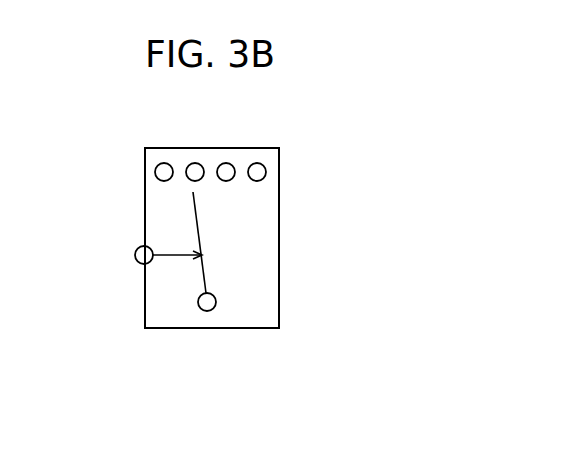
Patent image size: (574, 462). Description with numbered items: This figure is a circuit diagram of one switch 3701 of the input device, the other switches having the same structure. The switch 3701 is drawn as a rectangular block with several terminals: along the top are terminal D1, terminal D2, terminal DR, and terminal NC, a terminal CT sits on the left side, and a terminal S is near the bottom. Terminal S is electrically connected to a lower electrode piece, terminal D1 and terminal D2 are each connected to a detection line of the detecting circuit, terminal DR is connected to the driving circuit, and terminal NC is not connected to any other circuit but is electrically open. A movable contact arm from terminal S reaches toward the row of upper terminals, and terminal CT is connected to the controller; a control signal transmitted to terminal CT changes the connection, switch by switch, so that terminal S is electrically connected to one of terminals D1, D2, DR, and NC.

The switch 3701 is at (332, 145).
The terminal D1 is at (160, 163).
The terminal D2 is at (193, 163).
The terminal DR is at (229, 163).
The terminal NC is at (261, 163).
The terminal CT is at (134, 256).
The terminal S is at (209, 311).